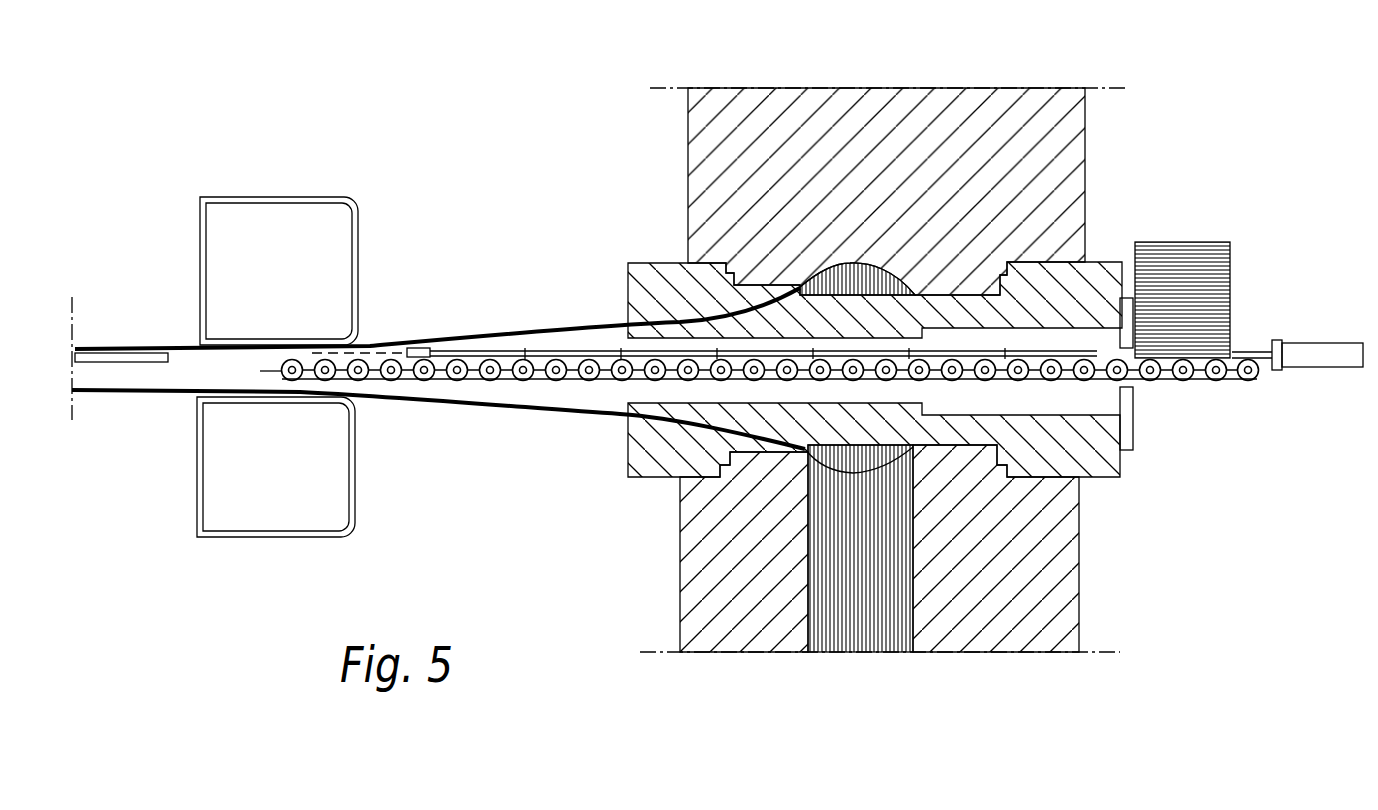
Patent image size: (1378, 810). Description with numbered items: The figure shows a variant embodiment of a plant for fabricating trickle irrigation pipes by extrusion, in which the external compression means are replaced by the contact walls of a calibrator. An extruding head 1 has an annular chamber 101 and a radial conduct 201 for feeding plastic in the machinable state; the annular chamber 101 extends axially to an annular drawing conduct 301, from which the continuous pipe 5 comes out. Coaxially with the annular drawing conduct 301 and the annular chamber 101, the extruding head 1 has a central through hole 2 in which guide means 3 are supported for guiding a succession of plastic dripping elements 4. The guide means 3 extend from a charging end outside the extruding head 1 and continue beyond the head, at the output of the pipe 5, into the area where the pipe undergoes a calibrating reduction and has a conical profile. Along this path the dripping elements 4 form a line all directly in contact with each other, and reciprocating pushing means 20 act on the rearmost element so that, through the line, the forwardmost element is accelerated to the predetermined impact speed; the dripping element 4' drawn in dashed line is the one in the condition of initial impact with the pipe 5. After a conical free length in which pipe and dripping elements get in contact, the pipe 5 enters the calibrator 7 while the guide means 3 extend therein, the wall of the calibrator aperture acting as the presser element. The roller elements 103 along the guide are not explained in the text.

The extruding head 1 is at (1093, 130).
The central through hole 2 is at (1097, 412).
The guide means 3 is at (759, 415).
The dripping elements 4 is at (652, 283).
The dripping element in initial impact condition 4' is at (383, 325).
The pipe 5 is at (516, 409).
The calibrator 7 is at (362, 258).
The reciprocating pushing means 20 is at (1300, 367).
The annular chamber 101 is at (880, 282).
The chain rollers 103 is at (423, 379).
The radial conduct 201 is at (806, 598).
The annular drawing conduct 301 is at (690, 292).